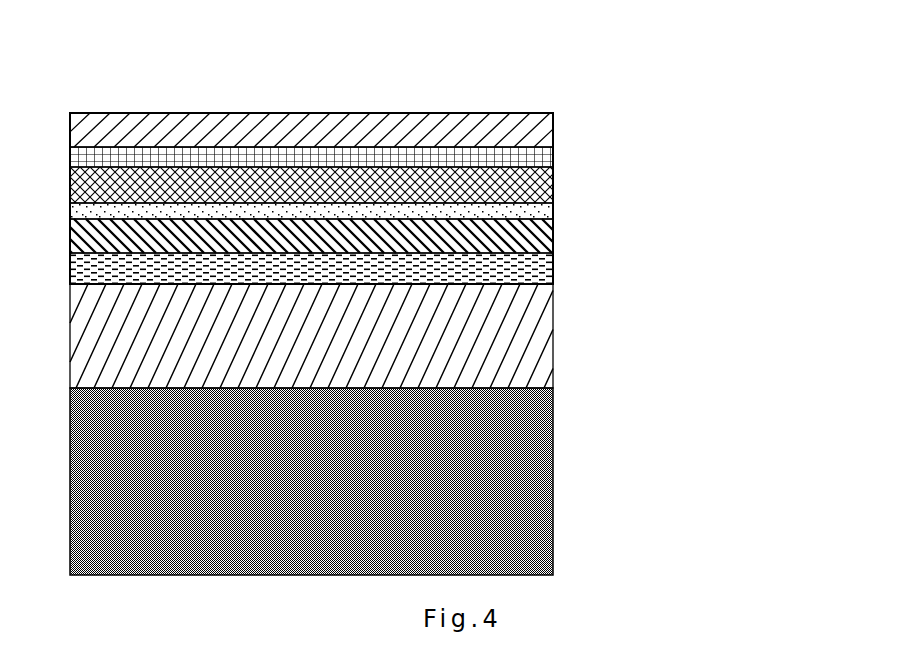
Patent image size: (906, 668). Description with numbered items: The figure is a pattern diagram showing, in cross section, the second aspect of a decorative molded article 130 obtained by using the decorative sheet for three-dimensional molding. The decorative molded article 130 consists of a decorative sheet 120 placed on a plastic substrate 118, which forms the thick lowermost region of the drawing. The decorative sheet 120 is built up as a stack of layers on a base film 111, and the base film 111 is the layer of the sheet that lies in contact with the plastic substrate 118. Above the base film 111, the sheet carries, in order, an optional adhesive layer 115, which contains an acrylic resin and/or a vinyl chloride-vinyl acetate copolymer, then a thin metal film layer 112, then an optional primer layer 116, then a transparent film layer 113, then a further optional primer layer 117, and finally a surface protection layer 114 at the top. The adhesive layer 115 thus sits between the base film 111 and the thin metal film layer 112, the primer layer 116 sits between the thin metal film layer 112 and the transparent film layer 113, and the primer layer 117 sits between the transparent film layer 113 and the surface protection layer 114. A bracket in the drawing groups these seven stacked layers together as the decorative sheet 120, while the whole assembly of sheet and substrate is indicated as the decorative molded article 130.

The decorative molded article 130 is at (413, 295).
The decorative sheet 120 is at (413, 219).
The surface protection layer 114 is at (553, 121).
The primer layer 117 is at (553, 153).
The transparent film layer 113 is at (553, 187).
The primer layer 116 is at (525, 209).
The thin metal film layer 112 is at (553, 233).
The adhesive layer 115 is at (363, 268).
The base film 111 is at (518, 330).
The plastic substrate 118 is at (520, 467).